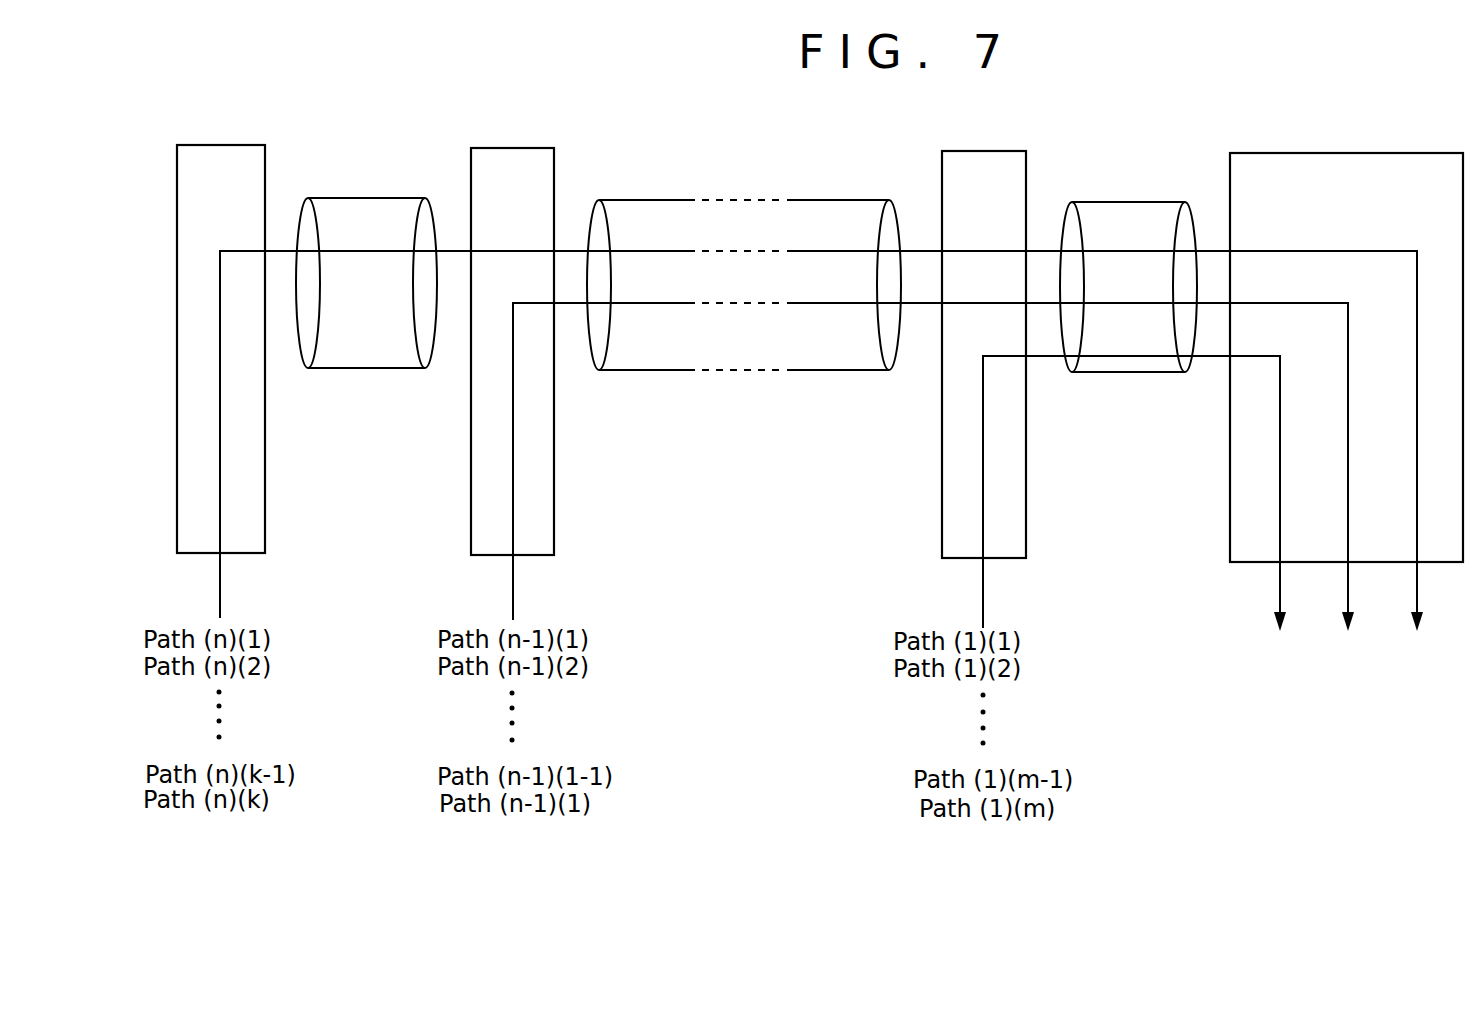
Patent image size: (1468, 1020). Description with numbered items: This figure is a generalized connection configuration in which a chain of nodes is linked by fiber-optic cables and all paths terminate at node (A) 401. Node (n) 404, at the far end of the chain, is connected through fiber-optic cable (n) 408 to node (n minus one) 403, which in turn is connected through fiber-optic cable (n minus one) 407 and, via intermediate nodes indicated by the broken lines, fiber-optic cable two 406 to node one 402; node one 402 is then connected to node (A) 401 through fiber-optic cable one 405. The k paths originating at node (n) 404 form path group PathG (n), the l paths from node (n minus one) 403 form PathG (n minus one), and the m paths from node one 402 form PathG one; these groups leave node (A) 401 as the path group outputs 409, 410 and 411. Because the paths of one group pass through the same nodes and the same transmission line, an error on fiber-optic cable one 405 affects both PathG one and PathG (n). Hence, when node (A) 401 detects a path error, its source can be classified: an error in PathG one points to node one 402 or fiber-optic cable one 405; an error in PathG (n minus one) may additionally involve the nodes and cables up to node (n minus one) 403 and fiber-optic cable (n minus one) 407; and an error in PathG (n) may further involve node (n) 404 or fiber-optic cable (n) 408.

The node (A) 401 is at (1430, 153).
The node (1) 402 is at (1026, 177).
The node (n-1) 403 is at (554, 172).
The node (n) 404 is at (265, 178).
The fiber-optic cable (1) 405 is at (1183, 203).
The fiber-optic cable (2) 406 is at (894, 217).
The fiber-optic cable (n-1) 407 is at (600, 200).
The fiber-optic cable (n) 408 is at (423, 198).
The path group output 409 is at (1280, 585).
The path group output 410 is at (1348, 588).
The path group output 411 is at (1417, 590).